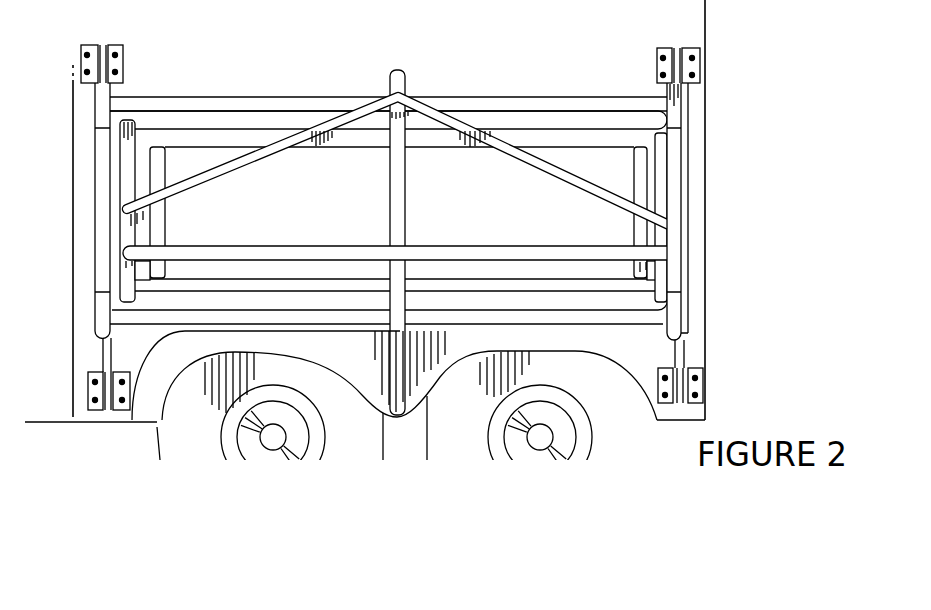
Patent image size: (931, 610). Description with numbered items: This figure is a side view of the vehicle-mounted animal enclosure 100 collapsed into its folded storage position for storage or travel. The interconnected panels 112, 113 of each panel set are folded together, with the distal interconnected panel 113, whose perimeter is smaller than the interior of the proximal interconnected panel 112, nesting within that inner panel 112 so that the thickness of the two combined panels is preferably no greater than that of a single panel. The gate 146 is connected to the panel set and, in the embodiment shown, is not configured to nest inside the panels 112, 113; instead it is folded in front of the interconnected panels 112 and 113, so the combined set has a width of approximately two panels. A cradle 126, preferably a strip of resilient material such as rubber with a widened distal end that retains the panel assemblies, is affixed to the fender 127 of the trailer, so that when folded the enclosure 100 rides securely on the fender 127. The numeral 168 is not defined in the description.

The vehicle-mounted animal enclosure 100 is at (365, 244).
The proximal interconnected panel 112 is at (511, 103).
The distal interconnected panel 113 is at (612, 145).
The cradle 126 is at (402, 323).
The fender 127 is at (147, 417).
The gate 146 is at (388, 95).
The fender 168 is at (658, 423).